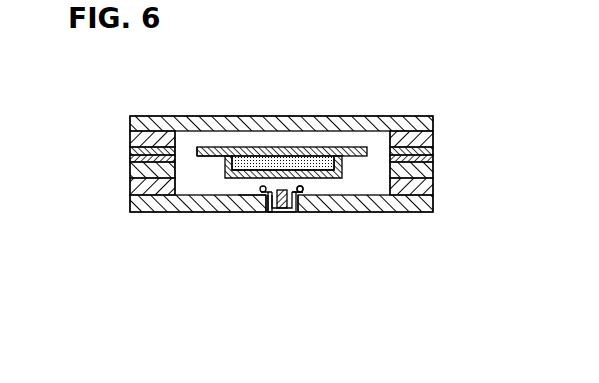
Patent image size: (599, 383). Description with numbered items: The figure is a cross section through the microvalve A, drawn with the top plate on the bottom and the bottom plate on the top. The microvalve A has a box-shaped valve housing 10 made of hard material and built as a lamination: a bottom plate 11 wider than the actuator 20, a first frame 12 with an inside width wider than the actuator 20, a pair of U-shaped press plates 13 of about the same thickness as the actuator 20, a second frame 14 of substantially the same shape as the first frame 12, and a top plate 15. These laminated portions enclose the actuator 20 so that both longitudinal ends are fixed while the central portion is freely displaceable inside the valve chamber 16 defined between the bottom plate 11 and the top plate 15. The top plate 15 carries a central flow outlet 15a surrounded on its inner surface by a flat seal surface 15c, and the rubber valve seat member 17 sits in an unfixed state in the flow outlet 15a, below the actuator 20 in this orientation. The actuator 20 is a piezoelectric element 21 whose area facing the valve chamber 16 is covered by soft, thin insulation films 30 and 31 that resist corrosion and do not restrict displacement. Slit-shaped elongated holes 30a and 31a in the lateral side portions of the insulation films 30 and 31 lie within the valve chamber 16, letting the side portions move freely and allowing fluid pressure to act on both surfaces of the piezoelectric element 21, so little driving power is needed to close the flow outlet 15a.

The microvalve A is at (82, 116).
The valve housing 10 is at (495, 103).
The bottom plate 11 is at (433, 125).
The first frame 12 is at (433, 140).
The press plates 13 is at (433, 168).
The second frame 14 is at (433, 183).
The top plate 15 is at (433, 205).
The flow outlet 15a is at (285, 212).
The seal surface 15c is at (258, 193).
The valve chamber 16 is at (303, 138).
The valve seat member 17 is at (266, 200).
The actuator 20 is at (400, 265).
The piezoelectric element 21 is at (293, 193).
The insulation film 30 is at (315, 165).
The elongated hole 30a is at (198, 157).
The insulation film 31 is at (350, 170).
The elongated hole 31a is at (197, 151).